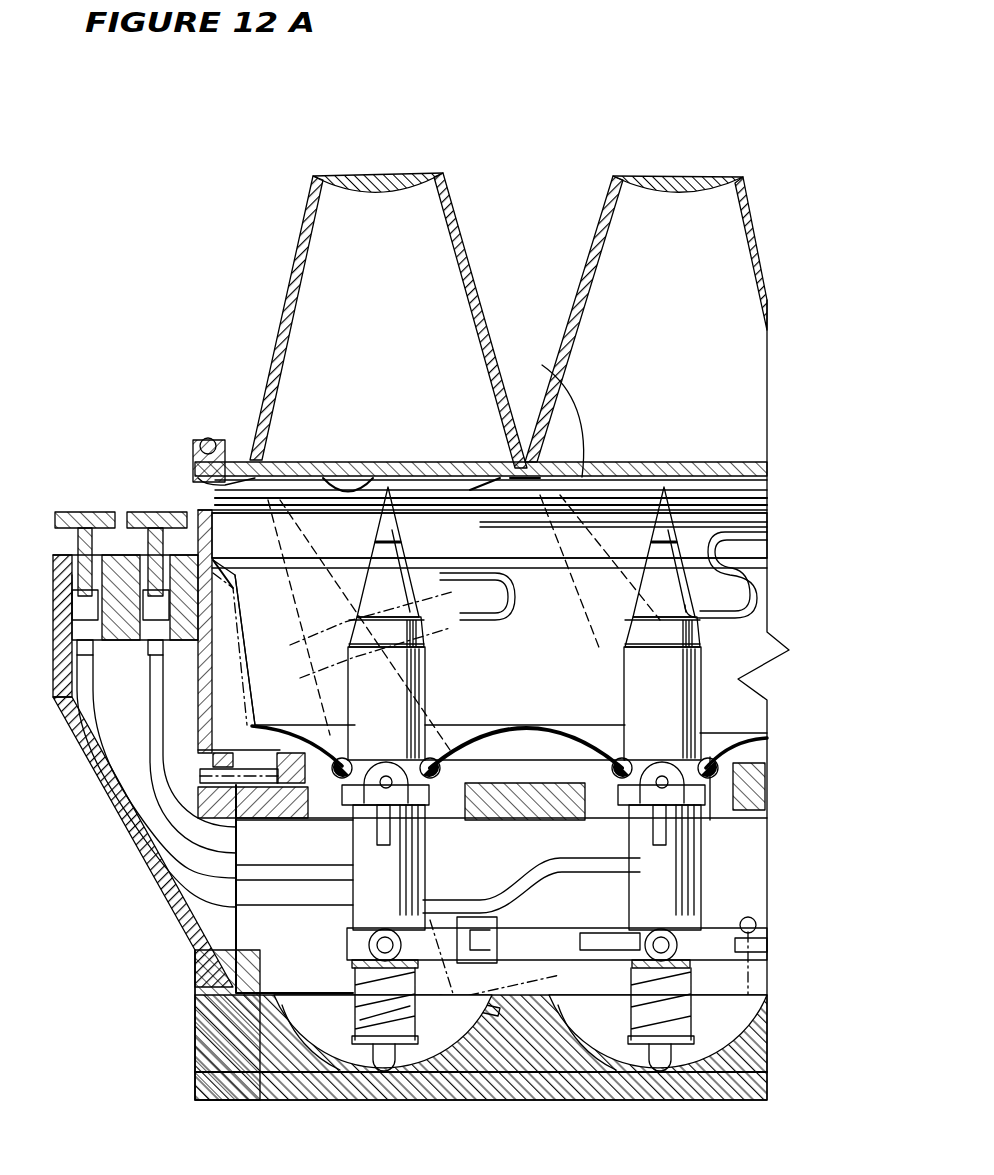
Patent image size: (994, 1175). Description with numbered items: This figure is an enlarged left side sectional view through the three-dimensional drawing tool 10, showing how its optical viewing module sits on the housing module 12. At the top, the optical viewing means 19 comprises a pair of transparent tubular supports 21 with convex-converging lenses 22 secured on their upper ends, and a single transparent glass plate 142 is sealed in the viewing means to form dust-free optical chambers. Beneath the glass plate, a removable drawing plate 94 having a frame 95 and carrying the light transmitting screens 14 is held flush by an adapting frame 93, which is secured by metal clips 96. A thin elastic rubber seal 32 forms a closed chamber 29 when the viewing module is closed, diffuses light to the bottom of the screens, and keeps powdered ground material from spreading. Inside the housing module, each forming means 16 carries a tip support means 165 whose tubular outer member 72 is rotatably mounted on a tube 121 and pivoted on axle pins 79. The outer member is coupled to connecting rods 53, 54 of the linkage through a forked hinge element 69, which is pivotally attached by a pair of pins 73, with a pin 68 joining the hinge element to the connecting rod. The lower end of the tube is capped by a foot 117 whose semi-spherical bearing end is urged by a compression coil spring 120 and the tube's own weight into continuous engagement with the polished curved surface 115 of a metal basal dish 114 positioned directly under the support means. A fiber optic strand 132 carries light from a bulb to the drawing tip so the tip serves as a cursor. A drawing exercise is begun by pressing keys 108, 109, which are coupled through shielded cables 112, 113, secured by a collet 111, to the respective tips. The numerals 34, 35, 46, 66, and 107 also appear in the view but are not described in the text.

The three-dimensional drawing tool 10 is at (222, 302).
The housing module 12 is at (168, 1047).
The light transmitting screens 14 is at (481, 465).
The forming means 16 is at (408, 494).
The optical viewing means 19 is at (575, 226).
The transparent tubular supports 21 is at (483, 314).
The convex-converging lenses 22 is at (390, 170).
The closed chamber 29 is at (545, 650).
The elastic rubber seal 32 is at (250, 686).
The housing 34 is at (248, 990).
The mounting block 35 is at (238, 617).
The rod 46 is at (256, 770).
The connecting rod 53 is at (545, 932).
The connecting rod 54 is at (731, 935).
The cable 66 is at (443, 906).
The pin 68 is at (488, 906).
The forked hinge element 69 is at (465, 968).
The tubular outer member 72 is at (432, 698).
The pins 73 is at (386, 928).
The axle pins 79 is at (386, 775).
The adapting frame 93 is at (192, 470).
The drawing plate 94 is at (386, 470).
The frame 95 is at (489, 535).
The metal clips 96 is at (206, 440).
The valve assembly 107 is at (125, 446).
The key 108 is at (155, 510).
The key 109 is at (72, 510).
The collet 111 is at (150, 670).
The shielded cable 112 is at (150, 708).
The shielded cable 113 is at (96, 706).
The metal basal dish 114 is at (544, 990).
The polished metal surface 115 is at (296, 1040).
The foot 117 is at (366, 1050).
The compression coil spring 120 is at (632, 982).
The tube 121 is at (425, 640).
The fiber optic strand 132 is at (735, 648).
The transparent glass plate 142 is at (310, 462).
The tip support means 165 is at (432, 711).